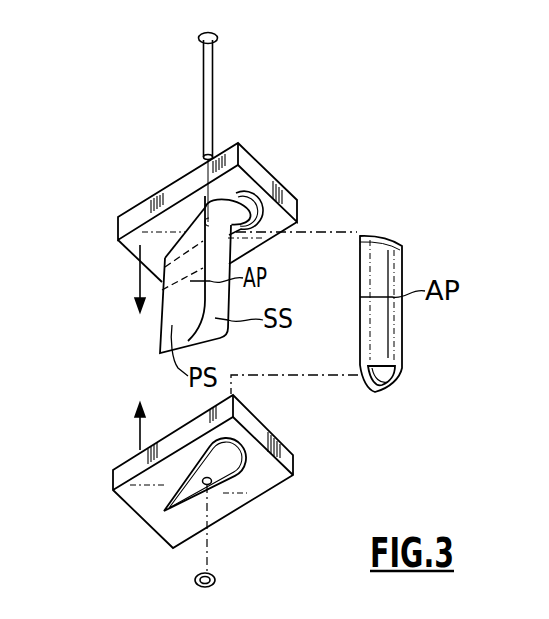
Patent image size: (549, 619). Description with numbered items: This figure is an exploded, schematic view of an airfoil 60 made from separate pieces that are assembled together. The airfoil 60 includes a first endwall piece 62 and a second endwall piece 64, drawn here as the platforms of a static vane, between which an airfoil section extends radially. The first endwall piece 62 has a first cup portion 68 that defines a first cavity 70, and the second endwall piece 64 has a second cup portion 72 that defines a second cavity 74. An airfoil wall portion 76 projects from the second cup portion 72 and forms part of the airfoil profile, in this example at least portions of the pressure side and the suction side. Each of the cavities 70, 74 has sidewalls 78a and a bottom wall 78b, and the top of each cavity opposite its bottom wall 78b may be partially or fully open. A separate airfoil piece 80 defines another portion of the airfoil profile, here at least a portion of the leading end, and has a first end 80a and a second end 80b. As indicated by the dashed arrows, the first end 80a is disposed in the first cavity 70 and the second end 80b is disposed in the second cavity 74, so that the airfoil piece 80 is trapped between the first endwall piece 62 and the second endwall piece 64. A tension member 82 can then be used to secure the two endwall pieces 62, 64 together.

The airfoil 60 is at (83, 497).
The first endwall piece 62 is at (295, 455).
The second endwall piece 64 is at (263, 176).
The first cup portion 68 is at (258, 502).
The first cavity 70 is at (186, 517).
The second cup portion 72 is at (233, 208).
The second cavity 74 is at (240, 190).
The airfoil wall portion 76 is at (175, 307).
The sidewalls 78a is at (287, 219).
The bottom wall 78b is at (276, 212).
The airfoil piece 80 is at (392, 330).
The first end 80a is at (410, 385).
The second end 80b is at (410, 237).
The tension member 82 is at (214, 58).